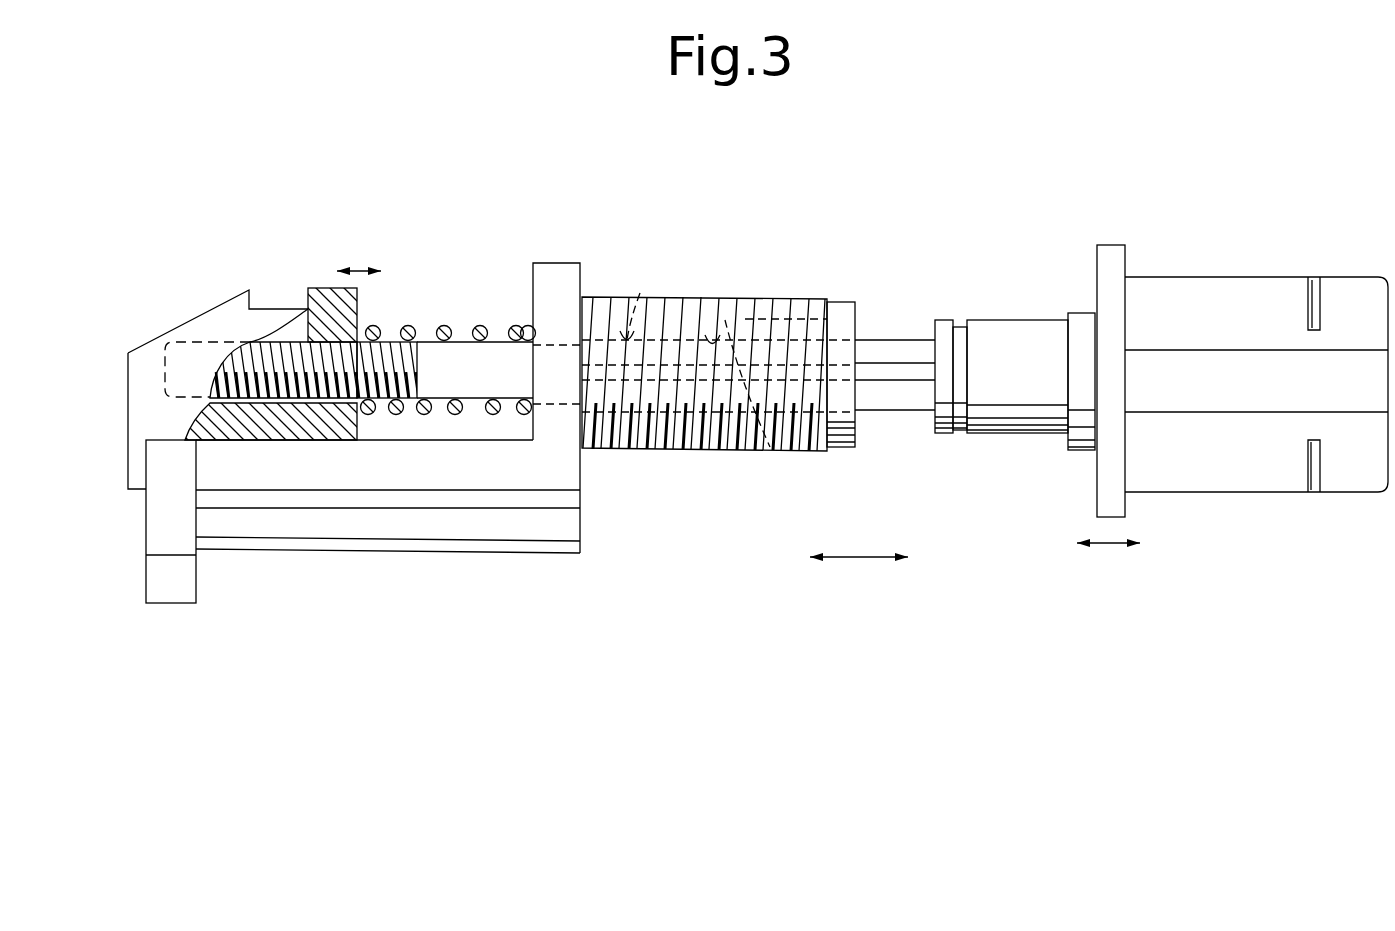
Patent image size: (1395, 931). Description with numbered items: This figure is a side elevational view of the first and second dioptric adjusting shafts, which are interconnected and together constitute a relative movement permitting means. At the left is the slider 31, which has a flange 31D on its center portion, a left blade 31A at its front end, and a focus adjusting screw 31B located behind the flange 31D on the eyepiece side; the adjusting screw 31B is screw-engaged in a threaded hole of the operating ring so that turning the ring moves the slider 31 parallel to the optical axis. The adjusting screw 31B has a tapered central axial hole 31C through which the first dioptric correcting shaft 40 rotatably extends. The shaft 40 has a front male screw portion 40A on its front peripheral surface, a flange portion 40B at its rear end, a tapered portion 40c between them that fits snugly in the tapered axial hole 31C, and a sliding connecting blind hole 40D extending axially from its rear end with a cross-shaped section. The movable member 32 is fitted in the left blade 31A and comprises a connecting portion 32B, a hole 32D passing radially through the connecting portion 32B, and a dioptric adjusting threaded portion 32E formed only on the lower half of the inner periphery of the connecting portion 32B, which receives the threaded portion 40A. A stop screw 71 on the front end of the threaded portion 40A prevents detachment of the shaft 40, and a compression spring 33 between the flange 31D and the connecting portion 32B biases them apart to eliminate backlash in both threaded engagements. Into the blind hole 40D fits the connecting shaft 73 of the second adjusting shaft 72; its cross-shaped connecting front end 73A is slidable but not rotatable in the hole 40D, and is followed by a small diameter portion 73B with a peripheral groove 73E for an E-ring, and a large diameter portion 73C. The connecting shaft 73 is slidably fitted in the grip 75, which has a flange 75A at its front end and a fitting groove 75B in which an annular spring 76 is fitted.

The stop screw 71 is at (170, 367).
The movable member 32 is at (207, 314).
The connecting portion 32B is at (230, 308).
The hole 32D is at (252, 305).
The dioptric adjusting threaded portion 32E is at (262, 405).
The front male screw portion 40A is at (383, 350).
The compression spring 33 is at (444, 325).
The first dioptric correcting shaft 40 is at (497, 372).
The sliding connecting blind hole 40D is at (727, 330).
The tapered portion 40c is at (783, 307).
The flange portion 40B is at (845, 302).
The slider 31 is at (473, 470).
The left blade 31A is at (185, 535).
The flange 31D is at (563, 265).
The focus adjusting screw 31B is at (680, 297).
The tapered central axial hole 31C is at (640, 293).
The connecting shaft 73 is at (953, 170).
The connecting front end 73A is at (887, 342).
The peripheral groove 73E is at (960, 335).
The small diameter portion 73B is at (1002, 327).
The large diameter portion 73C is at (1082, 313).
The second adjusting shaft 72 is at (1080, 172).
The flange 75A is at (1115, 250).
The grip 75 is at (1223, 273).
The fitting groove 75B is at (1318, 290).
The annular spring 76 is at (1313, 478).